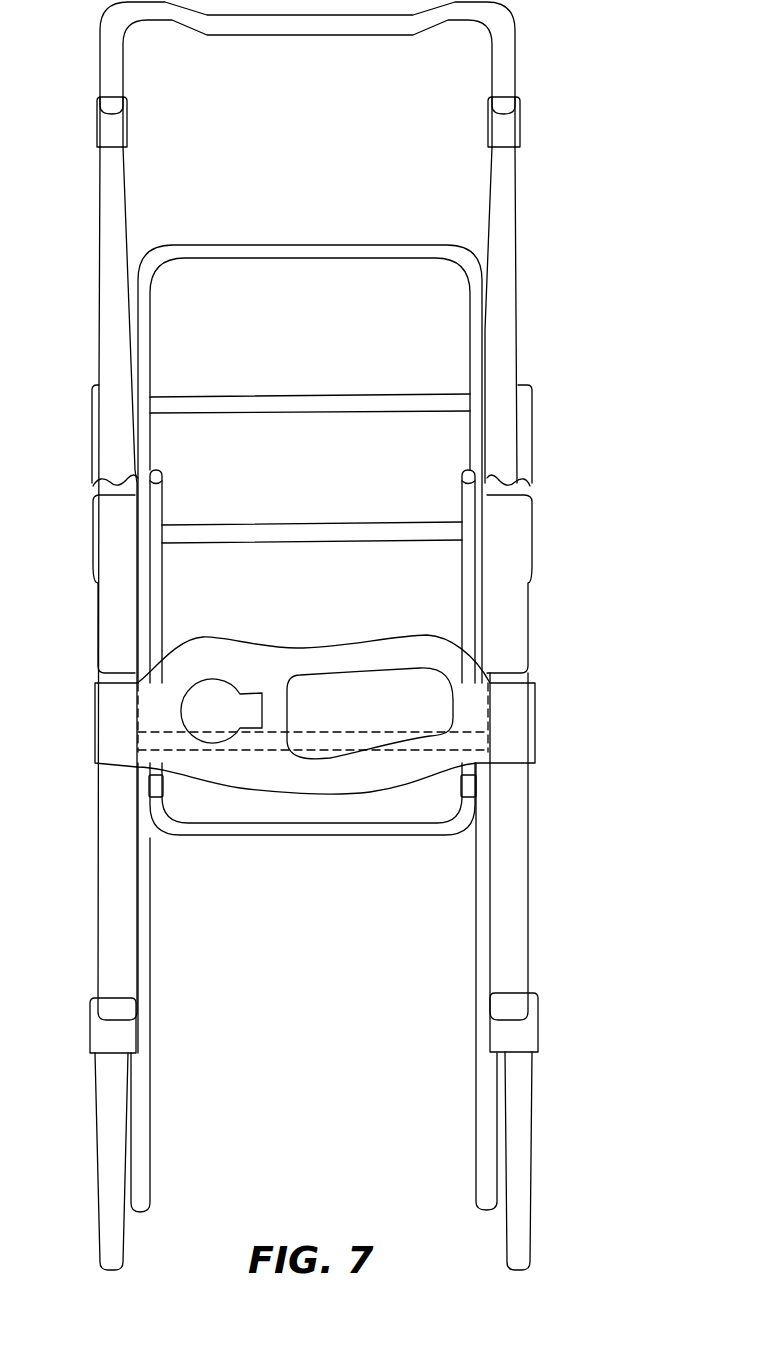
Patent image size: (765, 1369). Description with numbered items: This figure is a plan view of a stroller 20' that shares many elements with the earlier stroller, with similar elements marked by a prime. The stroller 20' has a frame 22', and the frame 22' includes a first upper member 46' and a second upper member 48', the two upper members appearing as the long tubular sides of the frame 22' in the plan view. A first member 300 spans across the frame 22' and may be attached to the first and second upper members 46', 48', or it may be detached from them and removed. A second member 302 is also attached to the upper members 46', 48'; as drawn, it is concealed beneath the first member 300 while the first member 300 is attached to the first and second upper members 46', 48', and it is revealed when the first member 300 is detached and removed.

The stroller 20' is at (366, 607).
The frame 22' is at (351, 1093).
The first upper member 46' is at (82, 583).
The second upper member 48' is at (543, 583).
The first member 300 is at (520, 713).
The second member 302 is at (420, 752).